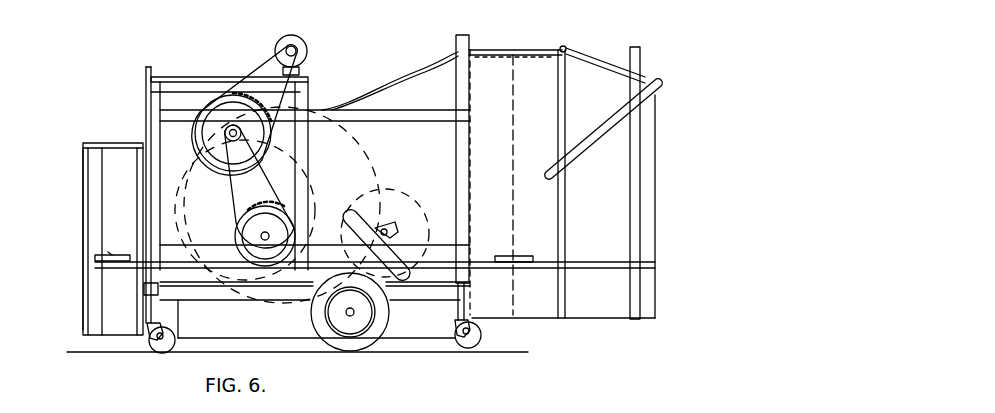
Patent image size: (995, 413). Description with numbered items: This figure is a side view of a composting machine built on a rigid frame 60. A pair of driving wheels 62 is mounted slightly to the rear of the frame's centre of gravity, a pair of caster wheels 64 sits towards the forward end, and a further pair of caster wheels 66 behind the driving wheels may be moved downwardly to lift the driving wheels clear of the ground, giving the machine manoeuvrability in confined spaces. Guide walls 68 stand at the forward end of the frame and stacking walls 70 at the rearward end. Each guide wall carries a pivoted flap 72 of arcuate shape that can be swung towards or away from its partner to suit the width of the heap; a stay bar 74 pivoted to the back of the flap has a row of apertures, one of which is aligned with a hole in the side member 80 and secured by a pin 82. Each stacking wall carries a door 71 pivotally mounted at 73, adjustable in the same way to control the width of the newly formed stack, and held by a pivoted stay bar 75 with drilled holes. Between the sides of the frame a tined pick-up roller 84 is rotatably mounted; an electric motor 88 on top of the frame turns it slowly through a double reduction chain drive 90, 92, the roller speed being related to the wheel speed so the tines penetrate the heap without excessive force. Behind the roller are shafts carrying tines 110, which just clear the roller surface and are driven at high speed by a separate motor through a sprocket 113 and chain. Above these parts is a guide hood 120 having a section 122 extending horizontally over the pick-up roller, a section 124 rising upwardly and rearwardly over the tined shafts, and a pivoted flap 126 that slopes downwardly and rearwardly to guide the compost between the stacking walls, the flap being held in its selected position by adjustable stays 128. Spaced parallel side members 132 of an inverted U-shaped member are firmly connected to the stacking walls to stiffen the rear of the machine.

The rigid frame 60 is at (410, 110).
The driving wheels 62 is at (348, 348).
The caster wheels 64 is at (160, 353).
The further caster wheels 66 is at (466, 350).
The guide walls 68 is at (104, 136).
The stacking walls 70 is at (538, 50).
The door 71 is at (500, 212).
The pivoted flap 72 is at (83, 183).
The pivot 73 is at (460, 175).
The stay bar 74 is at (95, 257).
The pivoted stay bar 75 is at (520, 262).
The side member 80 is at (110, 268).
The pin 82 is at (115, 272).
The roller 84 is at (350, 180).
The electric motor 88 is at (300, 50).
The chain drive 90 is at (258, 70).
The chain drive 92 is at (238, 212).
The tines 110 is at (402, 210).
The sprocket 113 is at (398, 230).
The guide hood 120 is at (491, 46).
The section 122 is at (323, 108).
The section 124 is at (388, 78).
The pivoted flap 126 is at (597, 58).
The adjustable stays 128 is at (594, 135).
The side members 132 is at (641, 58).